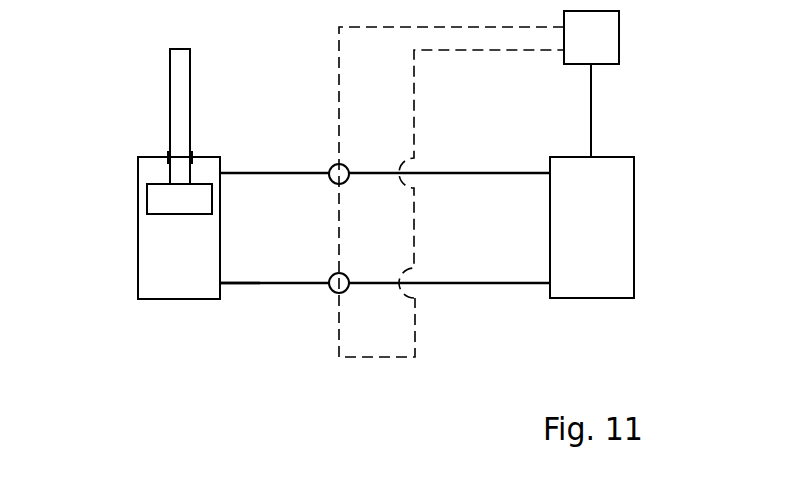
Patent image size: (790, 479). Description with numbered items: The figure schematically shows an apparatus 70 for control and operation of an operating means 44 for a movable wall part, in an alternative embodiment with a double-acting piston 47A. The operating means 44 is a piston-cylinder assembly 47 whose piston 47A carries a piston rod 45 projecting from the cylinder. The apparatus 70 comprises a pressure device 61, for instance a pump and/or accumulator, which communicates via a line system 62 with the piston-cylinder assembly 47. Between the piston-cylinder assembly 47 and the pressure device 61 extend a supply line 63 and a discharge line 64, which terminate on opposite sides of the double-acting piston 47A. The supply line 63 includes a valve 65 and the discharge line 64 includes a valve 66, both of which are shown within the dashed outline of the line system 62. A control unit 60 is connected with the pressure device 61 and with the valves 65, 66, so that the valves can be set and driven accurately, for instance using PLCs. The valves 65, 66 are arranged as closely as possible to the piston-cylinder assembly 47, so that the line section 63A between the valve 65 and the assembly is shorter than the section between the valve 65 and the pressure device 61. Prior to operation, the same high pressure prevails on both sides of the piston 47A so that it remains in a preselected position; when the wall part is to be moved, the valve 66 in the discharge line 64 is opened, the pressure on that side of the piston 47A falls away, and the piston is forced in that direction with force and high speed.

The operating means 44 is at (142, 318).
The piston rod 45 is at (178, 116).
The piston-cylinder assembly 47 is at (138, 269).
The double-acting piston 47A is at (158, 199).
The control unit 60 is at (608, 37).
The pressure device 61 is at (621, 228).
The line system 62 is at (464, 296).
The supply line 63 is at (512, 283).
The line section 63A is at (239, 283).
The discharge line 64 is at (512, 173).
The valve 65 is at (309, 342).
The valve 66 is at (309, 116).
The apparatus 70 is at (631, 129).